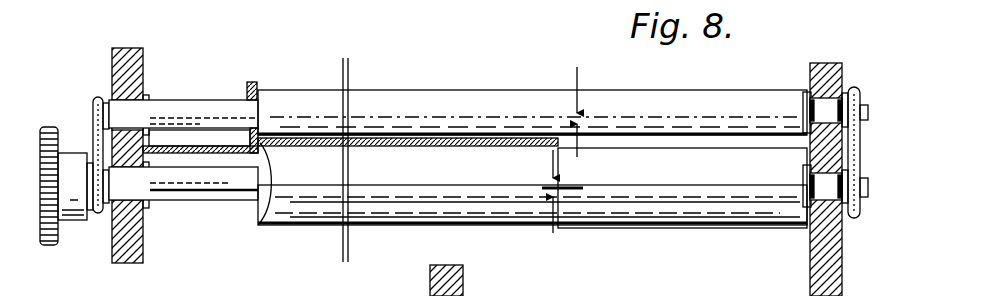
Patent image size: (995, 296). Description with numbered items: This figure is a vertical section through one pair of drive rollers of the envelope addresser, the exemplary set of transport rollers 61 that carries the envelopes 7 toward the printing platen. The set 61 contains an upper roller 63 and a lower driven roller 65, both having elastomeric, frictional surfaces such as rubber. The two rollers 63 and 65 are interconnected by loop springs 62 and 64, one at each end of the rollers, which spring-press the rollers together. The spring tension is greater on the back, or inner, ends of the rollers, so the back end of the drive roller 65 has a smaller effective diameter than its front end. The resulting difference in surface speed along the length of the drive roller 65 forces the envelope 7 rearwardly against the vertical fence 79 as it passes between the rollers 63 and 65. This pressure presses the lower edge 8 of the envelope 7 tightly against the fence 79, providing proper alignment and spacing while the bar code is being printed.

The envelope 7 is at (290, 146).
The lower edge 8 is at (262, 228).
The set of transport rollers 61 is at (726, 236).
The loop spring 62 is at (868, 138).
The upper roller 63 is at (403, 102).
The loop spring 64 is at (95, 138).
The lower driven roller 65 is at (400, 227).
The vertical fence 79 is at (254, 82).